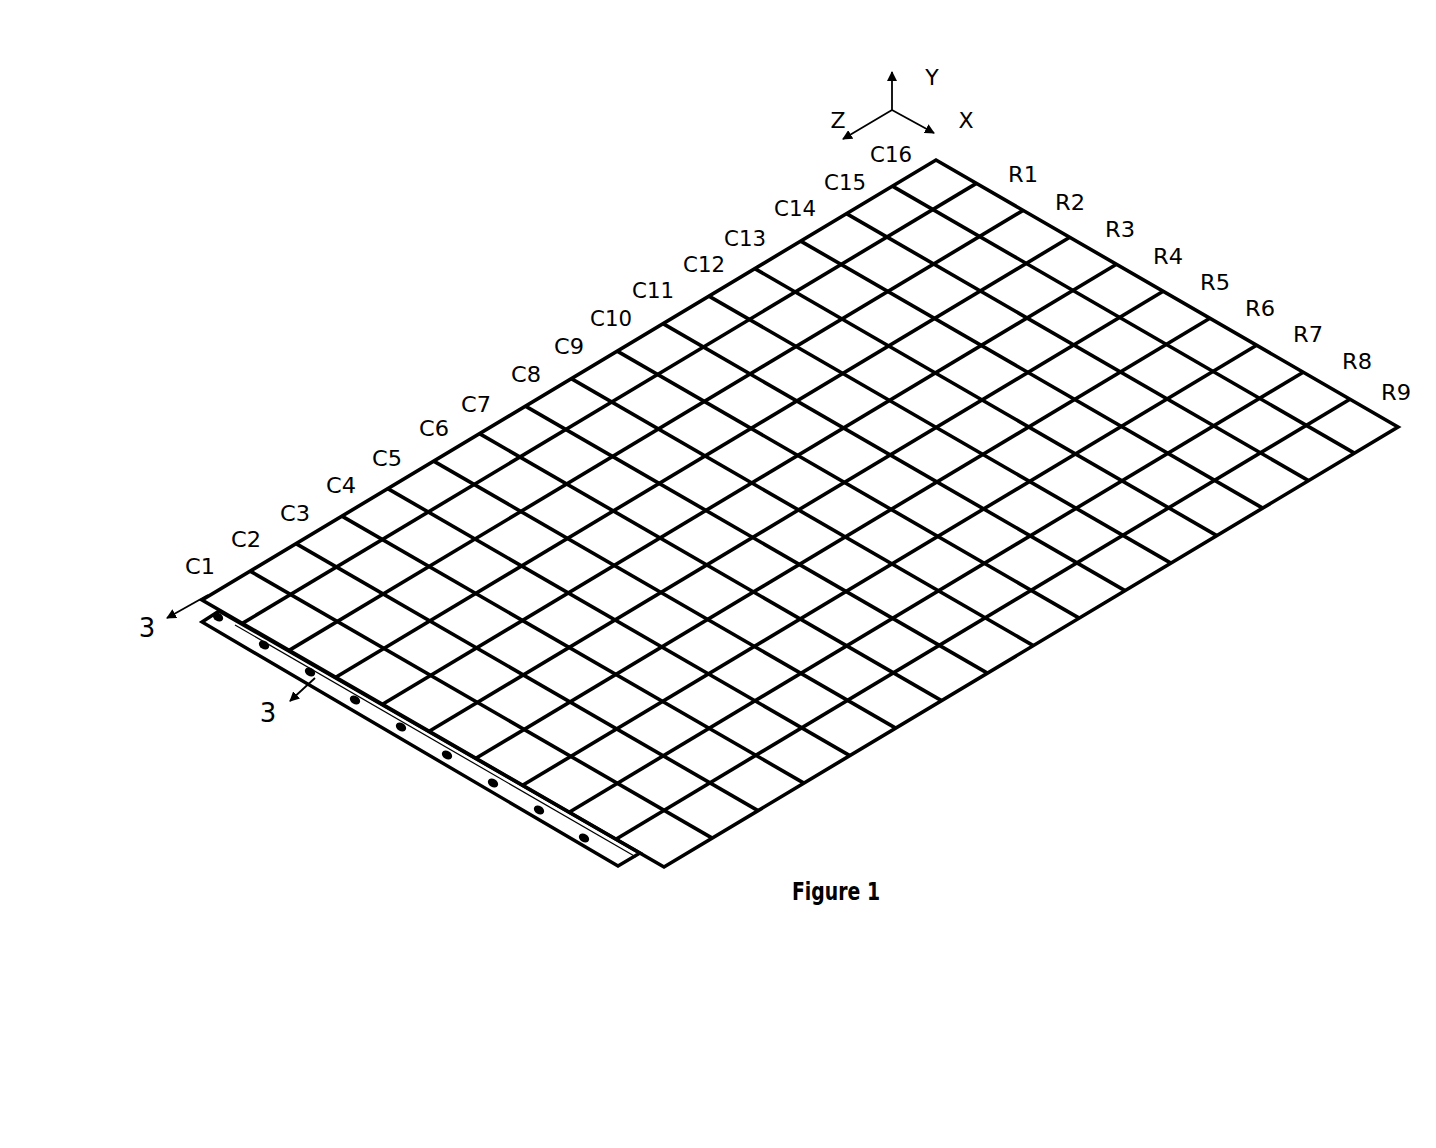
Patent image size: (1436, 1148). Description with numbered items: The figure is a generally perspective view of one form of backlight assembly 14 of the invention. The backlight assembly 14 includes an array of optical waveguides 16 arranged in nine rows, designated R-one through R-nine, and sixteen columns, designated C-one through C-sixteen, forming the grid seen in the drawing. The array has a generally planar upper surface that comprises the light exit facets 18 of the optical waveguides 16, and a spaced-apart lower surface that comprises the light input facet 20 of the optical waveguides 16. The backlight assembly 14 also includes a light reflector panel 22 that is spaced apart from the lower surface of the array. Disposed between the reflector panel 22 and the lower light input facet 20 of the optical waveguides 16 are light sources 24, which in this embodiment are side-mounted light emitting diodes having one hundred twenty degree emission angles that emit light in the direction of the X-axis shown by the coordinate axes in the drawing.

The backlight assembly 14 is at (560, 303).
The optical waveguides 16 is at (1245, 521).
The light exit facets 18 is at (1077, 593).
The light input facet 20 is at (232, 620).
The light reflector panel 22 is at (497, 800).
The light sources 24 is at (212, 623).